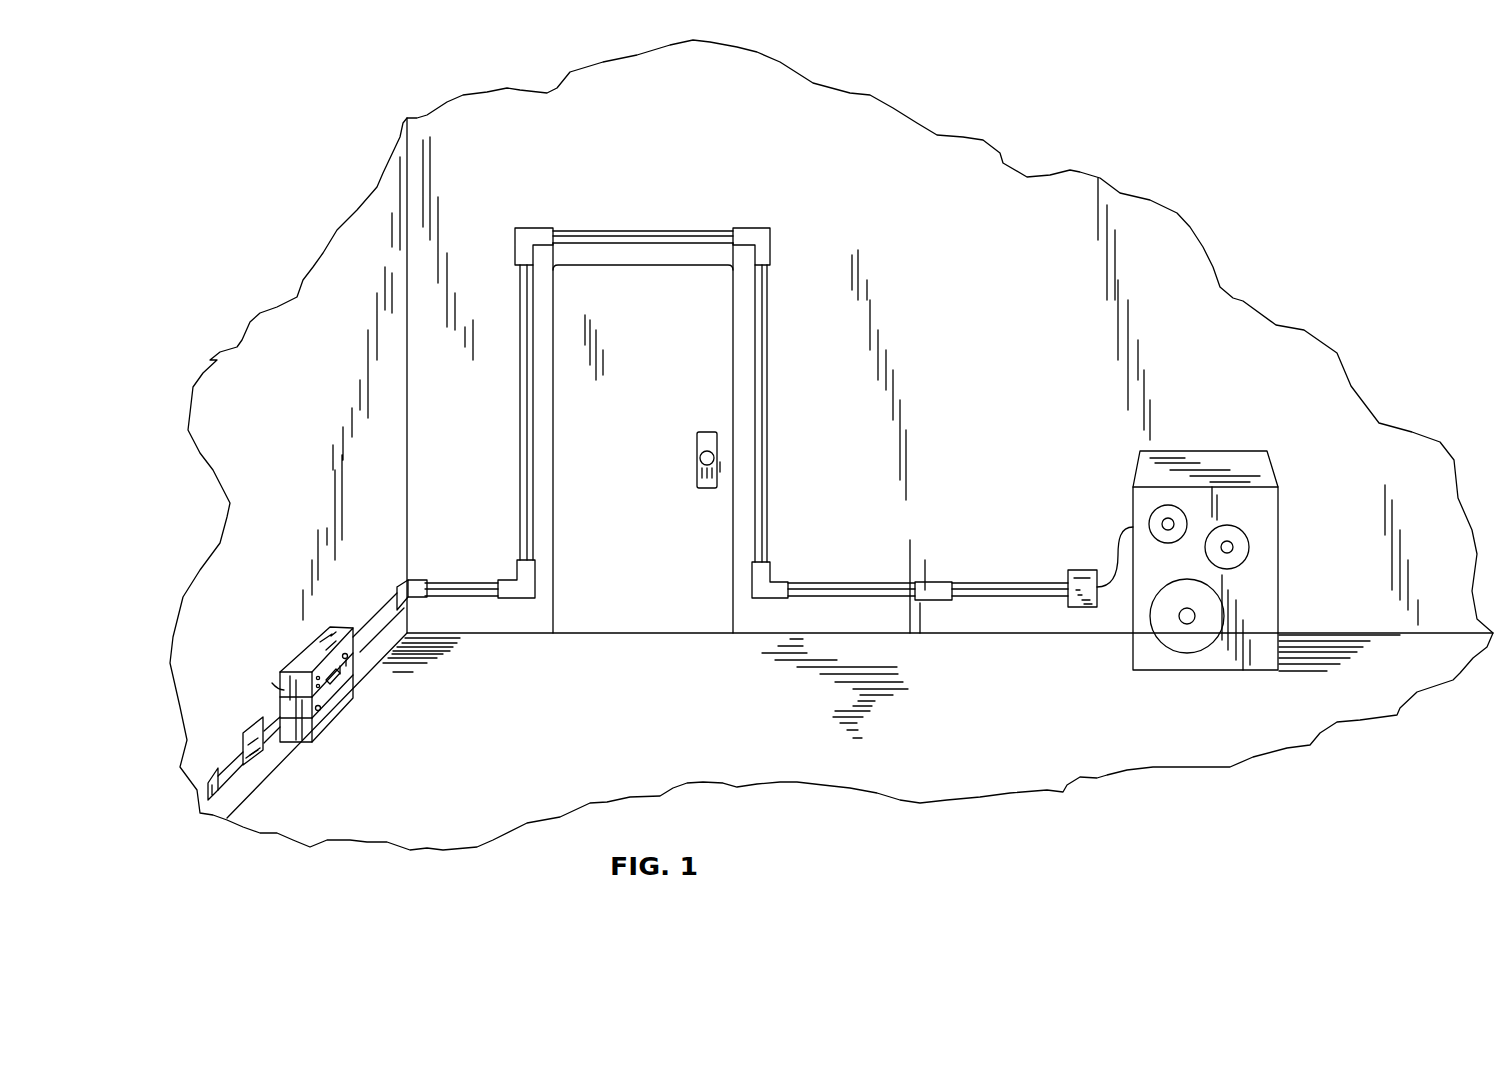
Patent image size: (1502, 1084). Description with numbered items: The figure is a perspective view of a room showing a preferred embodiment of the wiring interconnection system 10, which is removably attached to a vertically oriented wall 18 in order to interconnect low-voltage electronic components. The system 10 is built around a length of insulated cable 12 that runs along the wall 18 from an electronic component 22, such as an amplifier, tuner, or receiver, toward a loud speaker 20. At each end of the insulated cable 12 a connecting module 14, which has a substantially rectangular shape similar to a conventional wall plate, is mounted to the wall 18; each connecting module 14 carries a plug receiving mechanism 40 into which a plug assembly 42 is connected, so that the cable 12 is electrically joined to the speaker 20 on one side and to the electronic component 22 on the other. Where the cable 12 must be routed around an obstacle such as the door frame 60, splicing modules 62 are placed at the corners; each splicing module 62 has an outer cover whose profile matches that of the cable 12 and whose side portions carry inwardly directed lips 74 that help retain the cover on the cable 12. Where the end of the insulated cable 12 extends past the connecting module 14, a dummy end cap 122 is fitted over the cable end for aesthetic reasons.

The wiring interconnection system 10 is at (712, 172).
The insulated cable 12 is at (630, 243).
The connecting module 14 is at (1070, 582).
The wall 18 is at (263, 406).
The loud speaker 20 is at (1250, 458).
The electronic component 22 is at (312, 737).
The plug receiving mechanism 40 is at (1075, 608).
The plug assembly 42 is at (1120, 530).
The door frame 60 is at (557, 605).
The splicing module 62 is at (522, 240).
The inwardly directed lip 74 is at (935, 595).
The dummy end cap 122 is at (208, 790).